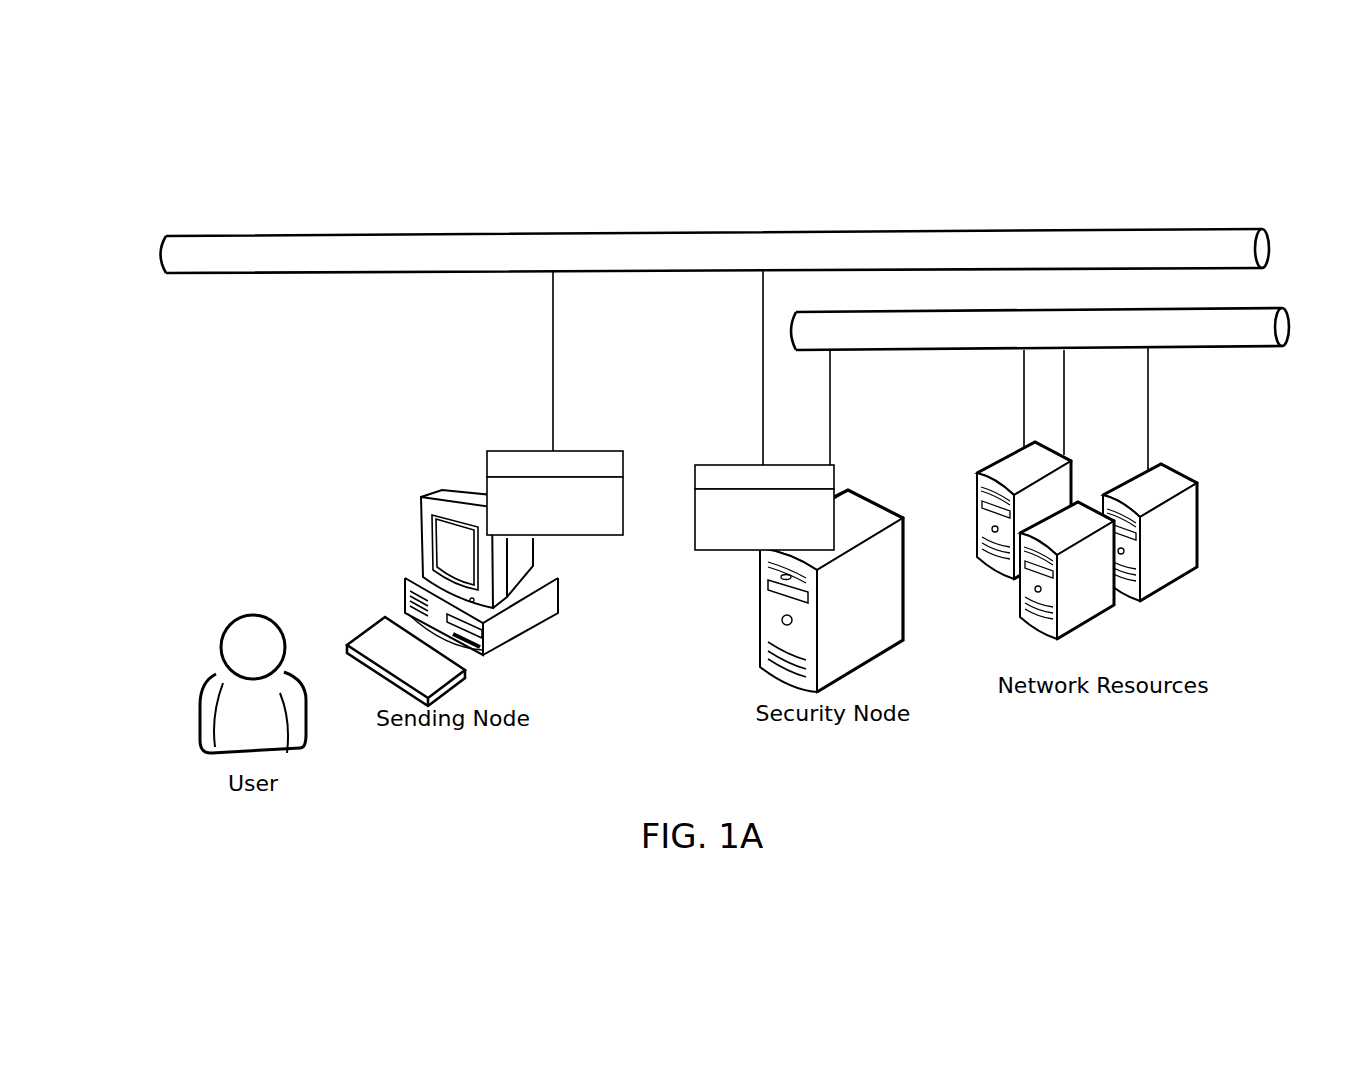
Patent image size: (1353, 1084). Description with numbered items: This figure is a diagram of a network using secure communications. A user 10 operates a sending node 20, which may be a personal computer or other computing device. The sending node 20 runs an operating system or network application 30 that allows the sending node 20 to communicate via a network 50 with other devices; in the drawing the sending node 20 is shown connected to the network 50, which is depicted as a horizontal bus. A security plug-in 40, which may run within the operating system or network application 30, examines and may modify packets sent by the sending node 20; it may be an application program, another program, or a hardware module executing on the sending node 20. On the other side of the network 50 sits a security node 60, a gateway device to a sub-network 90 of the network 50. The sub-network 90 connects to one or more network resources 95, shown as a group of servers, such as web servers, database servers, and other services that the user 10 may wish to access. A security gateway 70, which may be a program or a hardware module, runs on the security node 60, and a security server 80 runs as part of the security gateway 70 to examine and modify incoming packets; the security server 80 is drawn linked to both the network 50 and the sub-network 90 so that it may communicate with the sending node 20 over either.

The user 10 is at (235, 710).
The sending node 20 is at (417, 583).
The network application 30 is at (588, 527).
The security plug-in 40 is at (503, 453).
The network 50 is at (558, 249).
The security node 60 is at (775, 605).
The security gateway 70 is at (713, 526).
The security server 80 is at (710, 473).
The sub-network 90 is at (913, 331).
The network resources 95 is at (1182, 555).